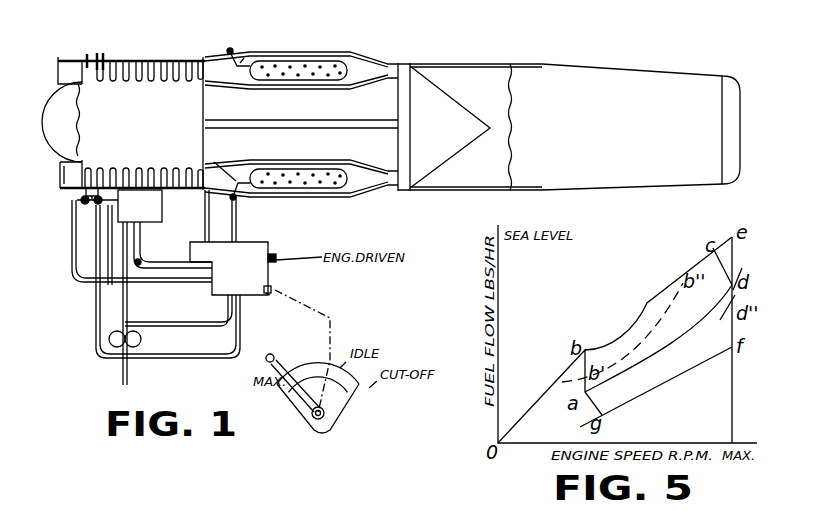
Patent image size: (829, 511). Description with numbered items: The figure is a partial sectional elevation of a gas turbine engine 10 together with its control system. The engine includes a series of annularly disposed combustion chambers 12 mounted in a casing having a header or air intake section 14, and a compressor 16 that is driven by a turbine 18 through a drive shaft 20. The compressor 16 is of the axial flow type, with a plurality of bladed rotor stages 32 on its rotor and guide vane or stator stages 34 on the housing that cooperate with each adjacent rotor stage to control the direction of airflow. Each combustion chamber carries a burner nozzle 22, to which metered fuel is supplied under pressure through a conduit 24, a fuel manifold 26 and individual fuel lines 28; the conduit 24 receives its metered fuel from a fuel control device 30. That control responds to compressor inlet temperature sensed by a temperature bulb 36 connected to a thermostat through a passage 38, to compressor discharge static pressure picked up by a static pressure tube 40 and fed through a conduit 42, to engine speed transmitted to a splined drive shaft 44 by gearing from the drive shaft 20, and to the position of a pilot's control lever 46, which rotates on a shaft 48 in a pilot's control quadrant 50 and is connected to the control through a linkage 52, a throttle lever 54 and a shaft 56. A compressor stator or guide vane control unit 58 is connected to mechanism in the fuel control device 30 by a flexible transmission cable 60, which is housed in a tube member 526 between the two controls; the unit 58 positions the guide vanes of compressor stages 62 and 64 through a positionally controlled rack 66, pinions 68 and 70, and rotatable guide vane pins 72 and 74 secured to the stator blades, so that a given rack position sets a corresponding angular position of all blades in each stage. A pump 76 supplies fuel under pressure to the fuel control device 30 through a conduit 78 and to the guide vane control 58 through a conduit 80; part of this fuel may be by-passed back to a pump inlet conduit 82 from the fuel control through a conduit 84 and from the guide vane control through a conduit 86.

The gas turbine engine 10 is at (378, 63).
The combustion chambers 12 is at (330, 62).
The header or air intake section 14 is at (243, 64).
The compressor 16 is at (158, 128).
The turbine 18 is at (411, 74).
The drive shaft 20 is at (330, 119).
The burner nozzle 22 is at (243, 58).
The conduit 24 is at (237, 232).
The fuel manifold 26 is at (240, 200).
The fuel lines 28 is at (222, 176).
The fuel control device 30 is at (248, 276).
The bladed rotor stages 32 is at (149, 60).
The guide vane or stator stages 34 is at (117, 58).
The temperature bulb 36 is at (58, 170).
The passage 38 is at (72, 278).
The static pressure tube 40 is at (205, 172).
The conduit 42 is at (204, 203).
The splined drive shaft 44 is at (277, 258).
The pilot's control lever 46 is at (271, 356).
The shaft 48 is at (312, 424).
The pilot's control quadrant 50 is at (362, 392).
The linkage 52 is at (333, 330).
The throttle lever 54 is at (277, 287).
The shaft 56 is at (262, 292).
The guide vane control unit 58 is at (151, 217).
The flexible transmission cable 60 is at (141, 263).
The compressor stage 62 is at (73, 56).
The compressor stage 64 is at (88, 54).
The rack 66 is at (110, 213).
The pinion 68 is at (85, 208).
The pinion 70 is at (98, 213).
The guide vane pin 72 is at (77, 200).
The guide vane pin 74 is at (118, 170).
The pump 76 is at (141, 340).
The conduit 78 is at (163, 323).
The conduit 80 is at (126, 302).
The pump inlet conduit 82 is at (127, 378).
The conduit 84 is at (194, 362).
The conduit 86 is at (100, 311).
The tube member 526 is at (144, 236).